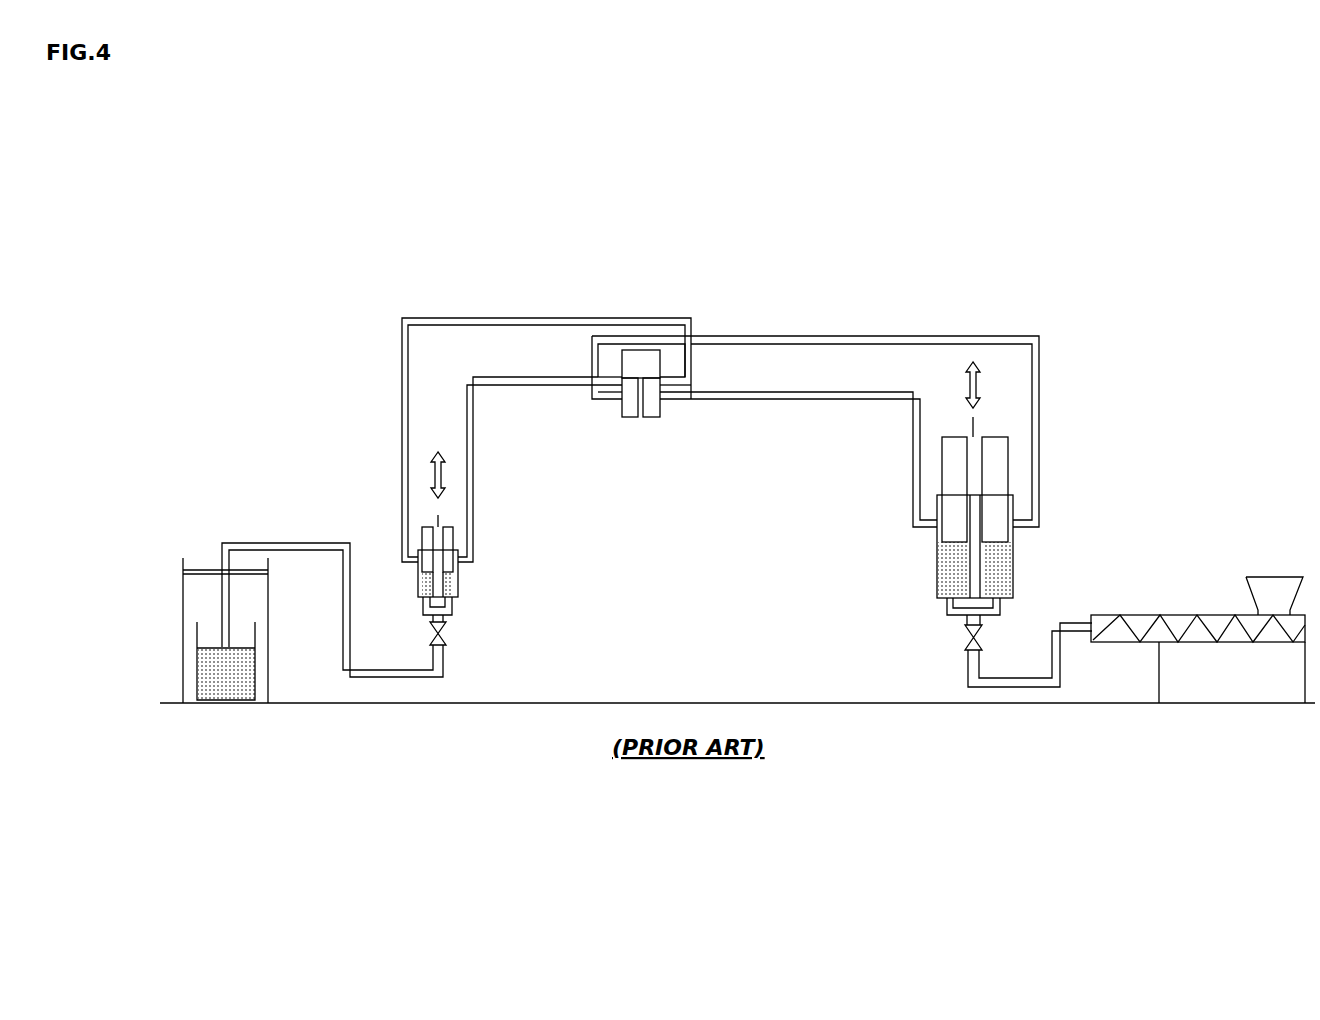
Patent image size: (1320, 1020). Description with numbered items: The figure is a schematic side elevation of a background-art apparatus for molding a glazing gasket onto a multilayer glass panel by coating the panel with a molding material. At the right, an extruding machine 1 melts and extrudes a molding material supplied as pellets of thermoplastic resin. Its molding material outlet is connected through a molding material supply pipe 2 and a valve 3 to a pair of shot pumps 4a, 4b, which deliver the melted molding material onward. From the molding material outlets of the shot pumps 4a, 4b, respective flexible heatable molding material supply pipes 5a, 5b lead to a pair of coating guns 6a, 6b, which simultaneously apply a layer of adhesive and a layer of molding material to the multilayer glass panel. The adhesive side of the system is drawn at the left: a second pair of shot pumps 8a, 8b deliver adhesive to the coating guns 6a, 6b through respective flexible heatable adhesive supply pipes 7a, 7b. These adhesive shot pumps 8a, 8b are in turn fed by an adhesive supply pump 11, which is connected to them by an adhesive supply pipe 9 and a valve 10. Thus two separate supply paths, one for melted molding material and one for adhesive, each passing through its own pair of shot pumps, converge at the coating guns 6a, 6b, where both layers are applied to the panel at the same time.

The extruding machine 1 is at (1198, 612).
The molding material supply pipe 2 is at (1013, 688).
The valve 3 is at (965, 644).
The shot pump 4a is at (935, 558).
The shot pump 4b is at (1013, 554).
The flexible heatable molding material supply pipe 5a is at (913, 443).
The flexible heatable molding material supply pipe 5b is at (1043, 412).
The coating gun 6a is at (651, 417).
The coating gun 6b is at (630, 417).
The flexible heatable adhesive supply pipe 7a is at (531, 302).
The flexible heatable adhesive supply pipe 7b is at (523, 387).
The shot pump 8a is at (418, 580).
The shot pump 8b is at (458, 582).
The adhesive supply pipe 9 is at (304, 543).
The valve 10 is at (447, 640).
The adhesive supply pump 11 is at (183, 598).